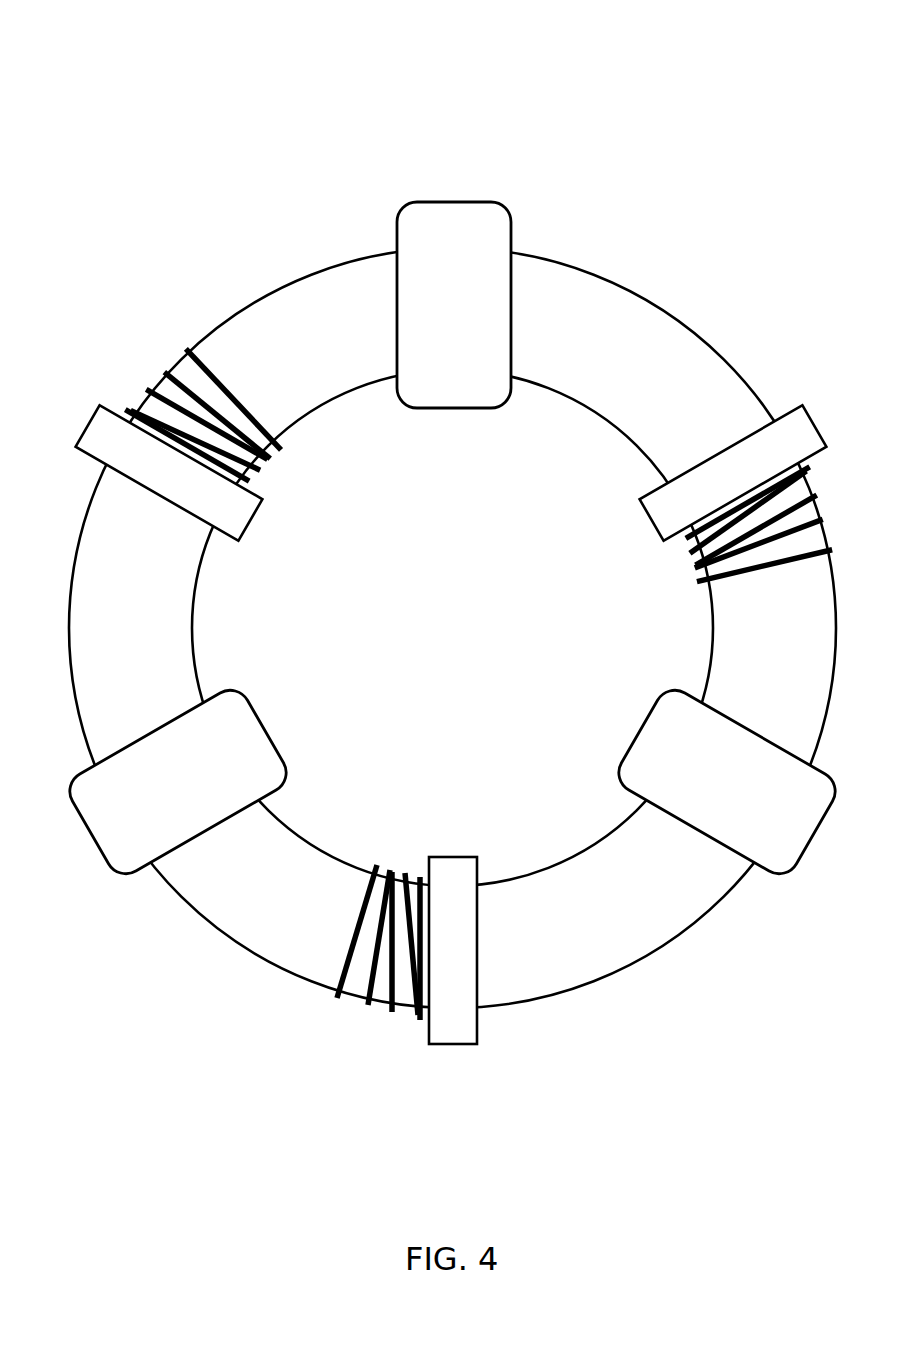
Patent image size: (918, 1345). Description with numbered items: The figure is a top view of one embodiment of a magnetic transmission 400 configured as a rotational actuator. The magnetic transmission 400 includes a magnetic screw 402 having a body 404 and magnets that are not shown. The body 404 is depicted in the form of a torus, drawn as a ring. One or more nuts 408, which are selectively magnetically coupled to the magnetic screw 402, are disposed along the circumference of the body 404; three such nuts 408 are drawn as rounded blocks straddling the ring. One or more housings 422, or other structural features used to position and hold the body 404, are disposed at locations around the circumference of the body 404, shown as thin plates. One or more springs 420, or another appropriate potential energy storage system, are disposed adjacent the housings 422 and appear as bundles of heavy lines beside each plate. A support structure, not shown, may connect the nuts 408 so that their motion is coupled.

The magnetic transmission 400 is at (136, 55).
The magnetic screw 402 is at (266, 240).
The body 404 is at (237, 313).
The nut 408 is at (421, 176).
The spring 420 is at (401, 1048).
The housing 422 is at (462, 1045).